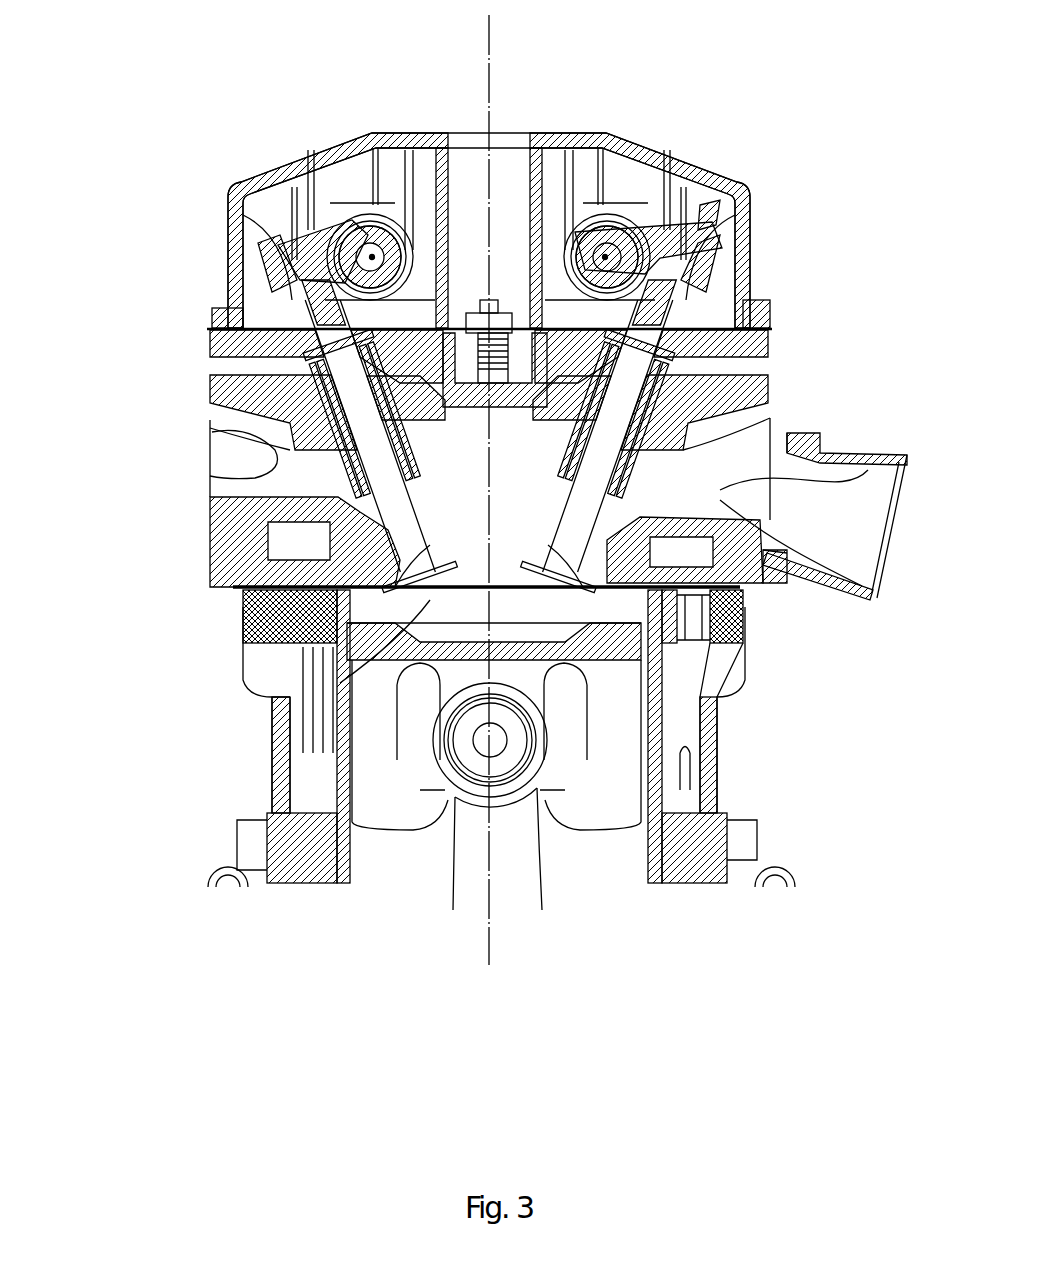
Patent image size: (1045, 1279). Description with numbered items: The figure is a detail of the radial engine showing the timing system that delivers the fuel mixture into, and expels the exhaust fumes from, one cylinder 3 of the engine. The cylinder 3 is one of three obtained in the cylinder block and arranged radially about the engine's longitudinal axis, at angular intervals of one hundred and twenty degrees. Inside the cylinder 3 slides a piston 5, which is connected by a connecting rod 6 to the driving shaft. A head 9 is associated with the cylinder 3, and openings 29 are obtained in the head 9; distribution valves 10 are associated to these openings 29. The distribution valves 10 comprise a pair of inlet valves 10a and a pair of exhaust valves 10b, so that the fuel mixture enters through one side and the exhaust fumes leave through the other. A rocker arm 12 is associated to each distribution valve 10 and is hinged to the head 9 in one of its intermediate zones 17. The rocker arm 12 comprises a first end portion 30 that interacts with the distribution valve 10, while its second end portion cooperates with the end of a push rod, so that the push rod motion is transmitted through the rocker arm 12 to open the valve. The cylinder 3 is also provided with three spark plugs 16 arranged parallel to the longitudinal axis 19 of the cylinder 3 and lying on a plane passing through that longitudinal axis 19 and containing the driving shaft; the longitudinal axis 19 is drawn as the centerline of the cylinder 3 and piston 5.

The cylinder 3 is at (700, 872).
The piston 5 is at (553, 582).
The connecting rod 6 is at (517, 878).
The head 9 is at (737, 217).
The distribution valve 10 is at (282, 366).
The inlet valve 10a is at (340, 683).
The exhaust valve 10b is at (815, 444).
The rocker arm 12 is at (235, 213).
The spark plug 16 is at (490, 300).
The intermediate zone 17 is at (362, 250).
The longitudinal axis 19 is at (488, 95).
The opening 29 is at (247, 457).
The first end portion 30 is at (253, 297).